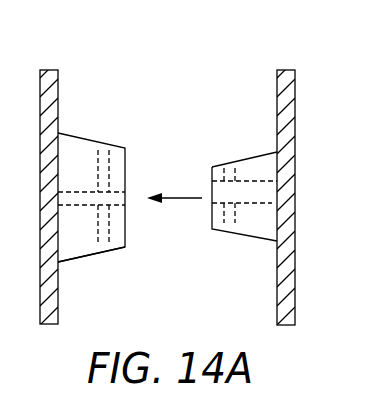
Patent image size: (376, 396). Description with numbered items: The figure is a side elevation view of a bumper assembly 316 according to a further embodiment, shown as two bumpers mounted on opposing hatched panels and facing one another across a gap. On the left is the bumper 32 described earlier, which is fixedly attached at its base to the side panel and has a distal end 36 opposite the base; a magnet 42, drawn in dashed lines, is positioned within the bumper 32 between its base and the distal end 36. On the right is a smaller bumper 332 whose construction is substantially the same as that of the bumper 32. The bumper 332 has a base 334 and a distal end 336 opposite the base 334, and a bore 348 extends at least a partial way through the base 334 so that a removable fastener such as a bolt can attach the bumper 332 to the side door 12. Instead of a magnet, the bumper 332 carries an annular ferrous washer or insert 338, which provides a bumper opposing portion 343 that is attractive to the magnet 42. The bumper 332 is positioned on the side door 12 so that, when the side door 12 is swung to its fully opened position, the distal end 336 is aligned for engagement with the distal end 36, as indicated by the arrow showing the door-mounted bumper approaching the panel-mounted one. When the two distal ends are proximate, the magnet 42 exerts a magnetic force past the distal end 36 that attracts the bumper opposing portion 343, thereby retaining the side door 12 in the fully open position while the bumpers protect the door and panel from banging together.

The side door 12 is at (286, 89).
The bumper assembly 316 is at (89, 64).
The bumper 32 is at (81, 146).
The distal end 36 is at (118, 238).
The magnet 42 is at (108, 160).
The bumper 332 is at (262, 167).
The base 334 is at (263, 233).
The distal end 336 is at (252, 160).
The annular ferrous washer or insert 338 is at (228, 175).
The bumper opposing portion 343 is at (226, 207).
The bore 348 is at (268, 200).